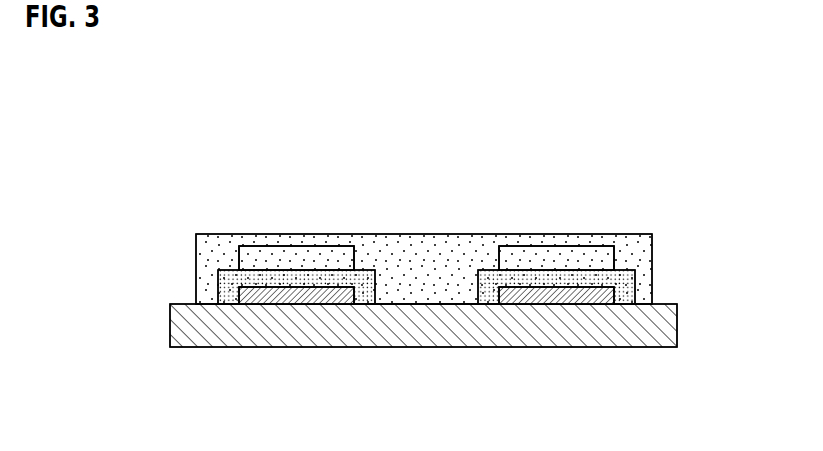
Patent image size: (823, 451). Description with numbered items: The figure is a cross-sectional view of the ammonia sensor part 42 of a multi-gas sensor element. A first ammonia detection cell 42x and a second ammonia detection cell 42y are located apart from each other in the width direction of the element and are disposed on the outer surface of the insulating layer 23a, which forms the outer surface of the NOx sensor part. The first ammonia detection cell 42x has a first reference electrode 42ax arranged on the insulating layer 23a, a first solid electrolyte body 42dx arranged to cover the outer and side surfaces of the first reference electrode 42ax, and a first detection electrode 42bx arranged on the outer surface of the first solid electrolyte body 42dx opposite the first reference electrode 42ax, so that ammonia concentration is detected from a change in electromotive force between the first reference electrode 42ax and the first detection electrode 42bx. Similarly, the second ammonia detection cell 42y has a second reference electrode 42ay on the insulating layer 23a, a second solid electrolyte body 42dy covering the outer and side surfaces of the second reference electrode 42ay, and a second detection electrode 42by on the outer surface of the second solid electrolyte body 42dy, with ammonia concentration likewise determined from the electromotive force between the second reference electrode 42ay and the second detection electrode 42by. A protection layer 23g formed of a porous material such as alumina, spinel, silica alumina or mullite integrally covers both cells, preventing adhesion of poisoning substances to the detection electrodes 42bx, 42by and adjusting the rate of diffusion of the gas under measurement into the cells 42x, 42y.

The ammonia sensor part 42 is at (642, 127).
The second ammonia detection cell 42y is at (298, 214).
The first ammonia detection cell 42x is at (603, 217).
The second reference electrode 42ay is at (355, 290).
The second detection electrode 42by is at (343, 246).
The second solid electrolyte body 42dy is at (228, 270).
The first reference electrode 42ax is at (652, 298).
The first detection electrode 42bx is at (615, 247).
The first solid electrolyte body 42dx is at (620, 280).
The protection layer 23g is at (196, 268).
The insulating layer 23a is at (672, 326).